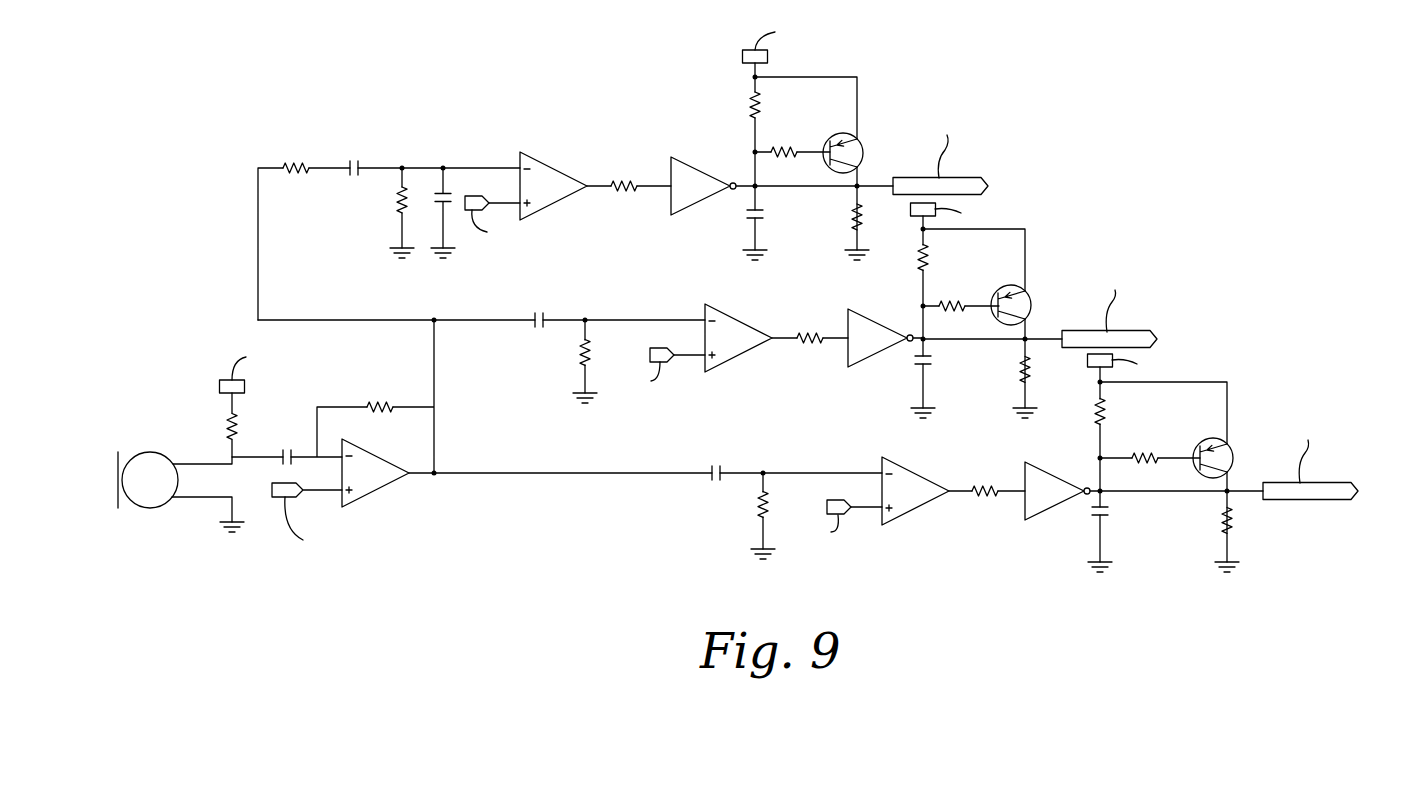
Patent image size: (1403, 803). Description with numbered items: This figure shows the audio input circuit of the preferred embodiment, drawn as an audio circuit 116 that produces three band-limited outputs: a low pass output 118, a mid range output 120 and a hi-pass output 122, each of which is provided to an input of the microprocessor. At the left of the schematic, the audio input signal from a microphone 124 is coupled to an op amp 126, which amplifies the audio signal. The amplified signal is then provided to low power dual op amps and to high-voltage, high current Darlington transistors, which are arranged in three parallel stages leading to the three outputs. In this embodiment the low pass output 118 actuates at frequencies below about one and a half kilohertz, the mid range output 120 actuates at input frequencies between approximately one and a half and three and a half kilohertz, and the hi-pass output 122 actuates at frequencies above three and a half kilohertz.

The audio circuit 116 is at (1175, 170).
The low pass output 118 is at (980, 178).
The mid range output 120 is at (1150, 332).
The hi-pass output 122 is at (1337, 483).
The microphone 124 is at (137, 491).
The op amp 126 is at (360, 451).